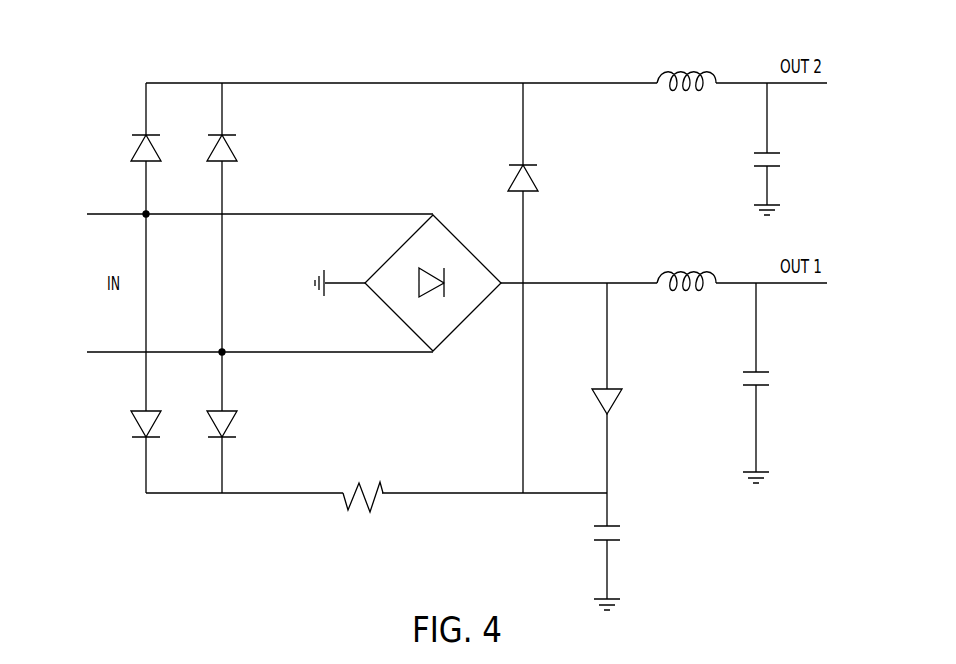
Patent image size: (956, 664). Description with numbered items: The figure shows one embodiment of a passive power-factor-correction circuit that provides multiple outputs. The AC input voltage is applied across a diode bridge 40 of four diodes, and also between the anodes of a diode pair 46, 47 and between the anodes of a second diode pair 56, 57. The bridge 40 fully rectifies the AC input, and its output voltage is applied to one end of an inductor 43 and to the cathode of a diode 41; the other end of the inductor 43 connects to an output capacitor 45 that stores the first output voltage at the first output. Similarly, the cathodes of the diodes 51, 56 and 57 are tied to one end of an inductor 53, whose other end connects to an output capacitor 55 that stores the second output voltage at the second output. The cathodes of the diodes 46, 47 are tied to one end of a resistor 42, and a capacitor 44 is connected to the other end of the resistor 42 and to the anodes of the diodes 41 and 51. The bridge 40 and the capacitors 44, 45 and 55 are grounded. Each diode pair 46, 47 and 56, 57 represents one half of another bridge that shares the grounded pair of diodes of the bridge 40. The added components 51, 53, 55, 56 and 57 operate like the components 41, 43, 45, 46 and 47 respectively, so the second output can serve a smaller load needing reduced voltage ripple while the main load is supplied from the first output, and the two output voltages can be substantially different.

The diode bridge 40 is at (458, 240).
The diode 41 is at (618, 403).
The resistor 42 is at (364, 515).
The inductor 43 is at (680, 271).
The capacitor 44 is at (619, 540).
The output capacitor 45 is at (768, 372).
The diode 46 is at (135, 425).
The diode 47 is at (232, 425).
The diode 51 is at (533, 178).
The inductor 53 is at (680, 71).
The output capacitor 55 is at (779, 152).
The diode 56 is at (135, 152).
The diode 57 is at (231, 152).